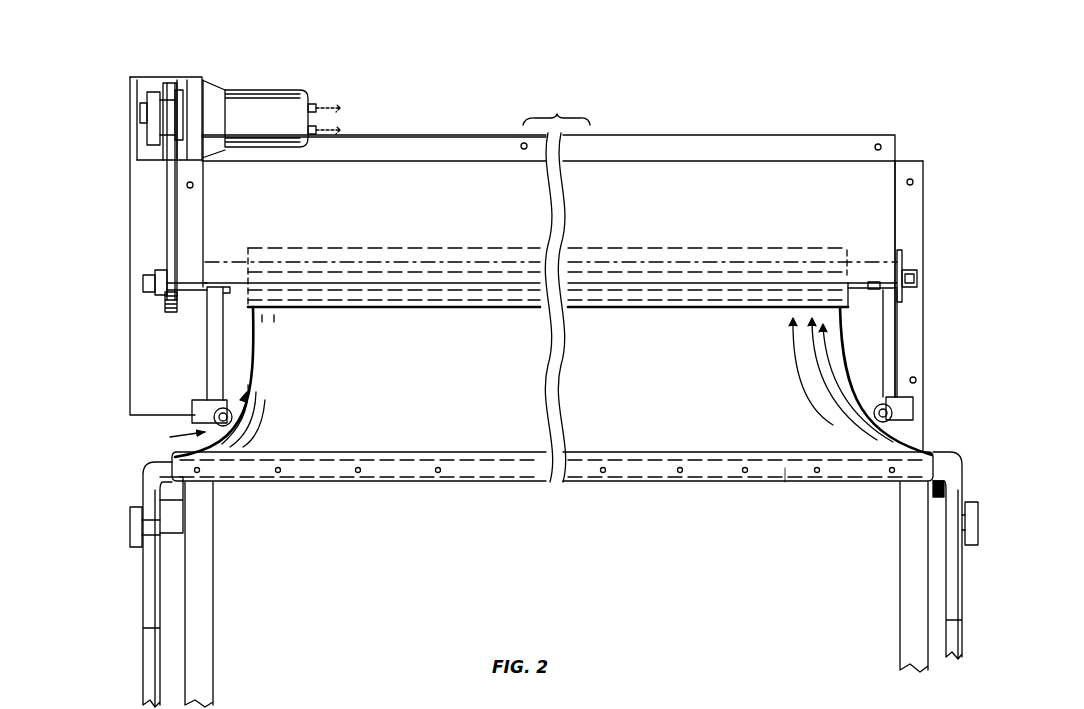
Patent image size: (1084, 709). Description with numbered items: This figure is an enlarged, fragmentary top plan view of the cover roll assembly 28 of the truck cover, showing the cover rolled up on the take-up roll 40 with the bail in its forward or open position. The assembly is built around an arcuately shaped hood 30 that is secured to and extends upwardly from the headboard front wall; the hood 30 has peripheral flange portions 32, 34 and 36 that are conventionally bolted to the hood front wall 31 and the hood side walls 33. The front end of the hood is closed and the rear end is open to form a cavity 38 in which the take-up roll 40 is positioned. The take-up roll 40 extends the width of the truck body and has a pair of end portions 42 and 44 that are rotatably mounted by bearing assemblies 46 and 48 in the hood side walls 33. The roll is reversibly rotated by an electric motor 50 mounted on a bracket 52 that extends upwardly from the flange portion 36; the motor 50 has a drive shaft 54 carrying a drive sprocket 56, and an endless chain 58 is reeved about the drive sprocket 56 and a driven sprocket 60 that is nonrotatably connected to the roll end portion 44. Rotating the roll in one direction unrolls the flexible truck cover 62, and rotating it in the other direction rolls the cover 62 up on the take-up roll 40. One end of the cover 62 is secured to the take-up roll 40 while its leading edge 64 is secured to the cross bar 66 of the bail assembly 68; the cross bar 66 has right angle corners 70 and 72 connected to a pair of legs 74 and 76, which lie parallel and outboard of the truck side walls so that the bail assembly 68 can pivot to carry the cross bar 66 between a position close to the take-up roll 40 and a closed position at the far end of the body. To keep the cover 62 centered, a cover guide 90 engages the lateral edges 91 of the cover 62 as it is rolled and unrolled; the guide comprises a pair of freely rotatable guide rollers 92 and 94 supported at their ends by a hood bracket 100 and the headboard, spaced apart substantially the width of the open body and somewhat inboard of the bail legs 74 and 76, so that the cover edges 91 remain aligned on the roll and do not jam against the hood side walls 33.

The cover roll assembly 28 is at (386, 122).
The hood 30 is at (732, 170).
The hood front wall 31 is at (442, 162).
The peripheral flange portion 32 is at (612, 134).
The hood side wall 33 is at (205, 215).
The peripheral flange portion 34 is at (918, 220).
The peripheral flange portion 36 is at (135, 245).
The cavity 38 is at (360, 290).
The take-up roll 40 is at (836, 325).
The end portion 42 is at (912, 278).
The end portion 44 is at (192, 296).
The bearing assembly 46 is at (878, 292).
The bearing assembly 48 is at (227, 293).
The electric motor 50 is at (262, 110).
The bracket 52 is at (138, 84).
The drive shaft 54 is at (132, 112).
The drive sprocket 56 is at (148, 128).
The endless chain 58 is at (165, 167).
The driven sprocket 60 is at (152, 292).
The truck cover 62 is at (487, 460).
The leading edge 64 is at (705, 475).
The cross bar 66 is at (782, 465).
The bail assembly 68 is at (960, 452).
The right angle corner 70 is at (956, 470).
The right angle corner 72 is at (140, 470).
The leg 74 is at (950, 578).
The leg 76 is at (145, 580).
The cover guide 90 is at (170, 437).
The lateral edges 91 is at (845, 400).
The guide roller 92 is at (876, 405).
The guide roller 94 is at (243, 397).
The hood bracket 100 is at (203, 412).